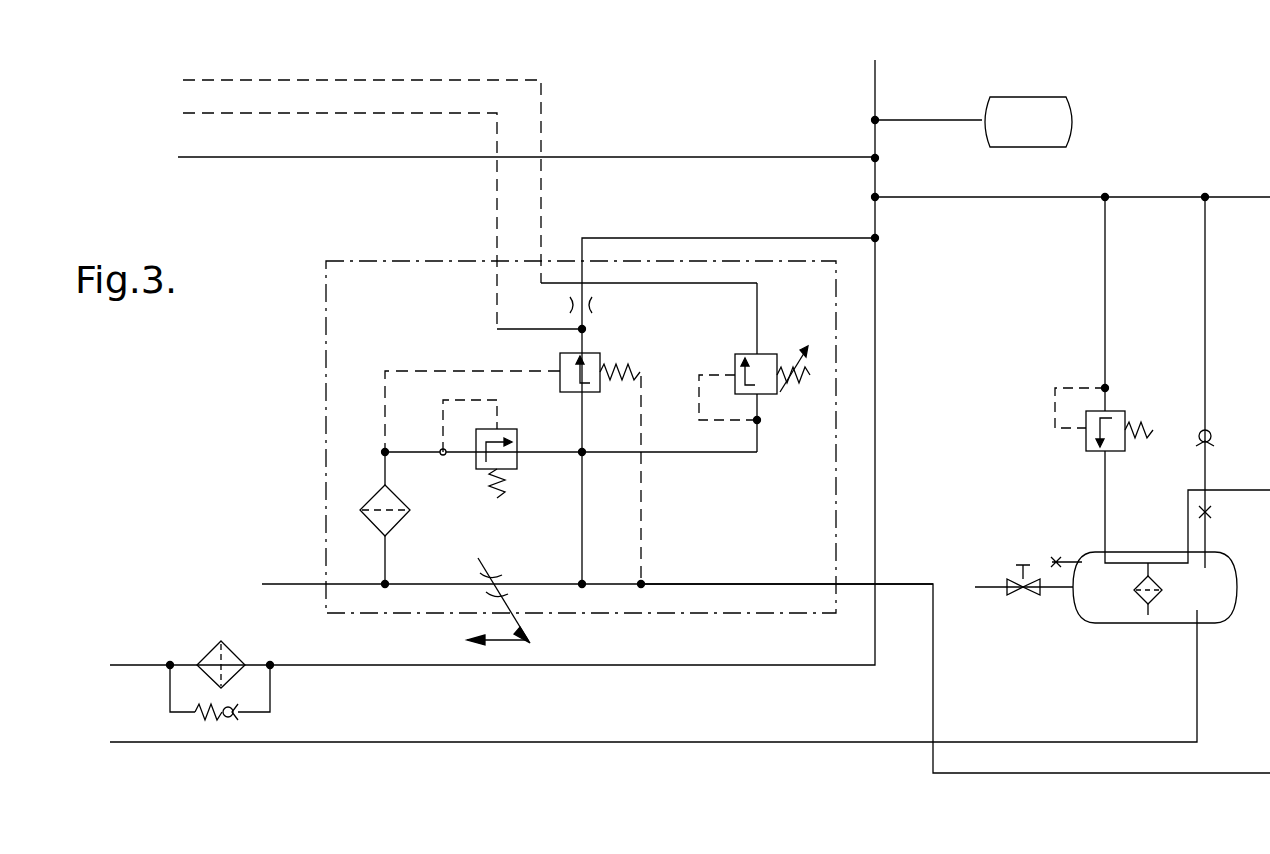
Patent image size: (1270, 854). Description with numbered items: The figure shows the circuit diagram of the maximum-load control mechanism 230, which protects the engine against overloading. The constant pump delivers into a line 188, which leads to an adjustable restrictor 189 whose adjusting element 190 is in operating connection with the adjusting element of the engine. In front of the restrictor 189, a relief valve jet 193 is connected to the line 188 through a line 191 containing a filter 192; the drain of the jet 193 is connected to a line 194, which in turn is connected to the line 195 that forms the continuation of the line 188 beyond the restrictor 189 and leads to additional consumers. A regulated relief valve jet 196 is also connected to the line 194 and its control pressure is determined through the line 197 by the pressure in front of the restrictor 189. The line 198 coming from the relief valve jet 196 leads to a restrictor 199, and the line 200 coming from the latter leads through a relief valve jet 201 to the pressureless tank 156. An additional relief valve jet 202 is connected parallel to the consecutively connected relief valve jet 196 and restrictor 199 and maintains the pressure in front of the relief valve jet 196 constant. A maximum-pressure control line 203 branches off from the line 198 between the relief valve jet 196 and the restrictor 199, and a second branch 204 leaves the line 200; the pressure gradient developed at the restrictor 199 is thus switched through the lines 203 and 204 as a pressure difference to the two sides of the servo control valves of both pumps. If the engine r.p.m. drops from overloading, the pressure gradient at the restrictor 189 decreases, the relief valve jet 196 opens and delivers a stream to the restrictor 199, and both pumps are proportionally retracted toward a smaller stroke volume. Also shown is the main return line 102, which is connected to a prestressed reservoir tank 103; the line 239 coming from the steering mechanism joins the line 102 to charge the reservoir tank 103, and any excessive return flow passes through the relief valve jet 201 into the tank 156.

The main return line 102 is at (875, 83).
The prestressed reservoir tank 103 is at (973, 122).
The tank 156 is at (1092, 626).
The line 188 is at (288, 582).
The adjustable restrictor 189 is at (500, 576).
The adjusting element 190 is at (530, 635).
The line 191 is at (418, 455).
The filter 192 is at (405, 522).
The relief valve jet 193 is at (519, 470).
The line 194 is at (582, 520).
The line 195 is at (725, 583).
The regulated relief valve jet 196 is at (592, 393).
The line 197 is at (448, 370).
The line 198 is at (586, 330).
The restrictor 199 is at (594, 305).
The line 200 is at (665, 238).
The relief valve jet 201 is at (1085, 453).
The additional relief valve jet 202 is at (772, 352).
The maximum-pressure control line 203 is at (497, 186).
The second relief valve jet 204 is at (541, 186).
The maximum-load control mechanism 230 is at (378, 261).
The line 239 is at (913, 197).